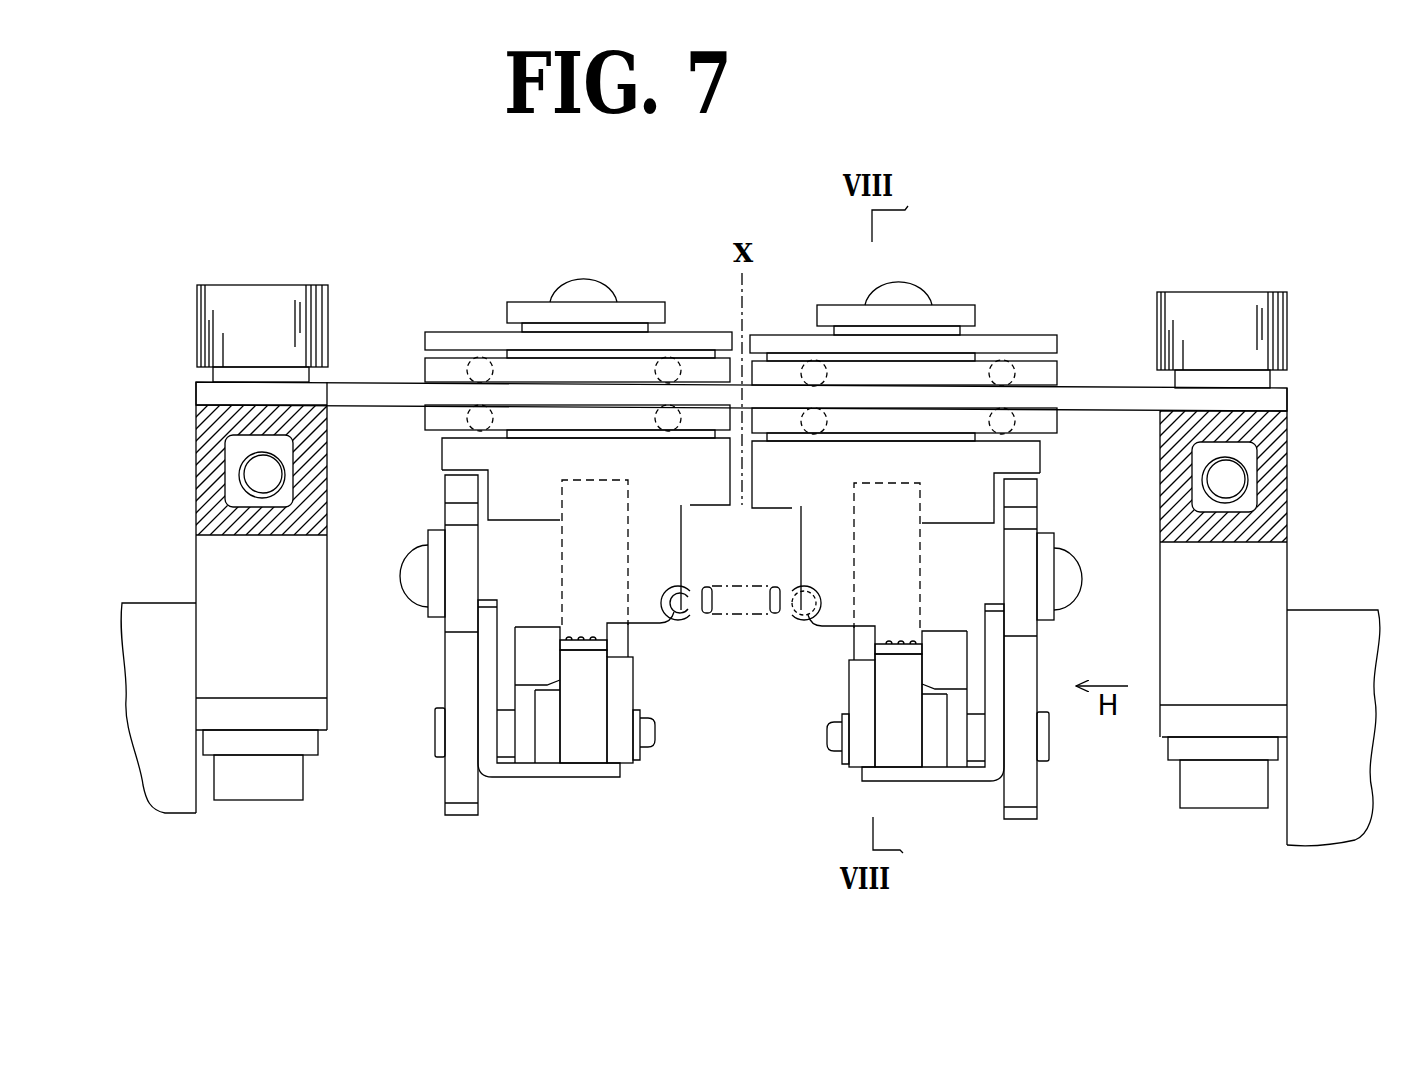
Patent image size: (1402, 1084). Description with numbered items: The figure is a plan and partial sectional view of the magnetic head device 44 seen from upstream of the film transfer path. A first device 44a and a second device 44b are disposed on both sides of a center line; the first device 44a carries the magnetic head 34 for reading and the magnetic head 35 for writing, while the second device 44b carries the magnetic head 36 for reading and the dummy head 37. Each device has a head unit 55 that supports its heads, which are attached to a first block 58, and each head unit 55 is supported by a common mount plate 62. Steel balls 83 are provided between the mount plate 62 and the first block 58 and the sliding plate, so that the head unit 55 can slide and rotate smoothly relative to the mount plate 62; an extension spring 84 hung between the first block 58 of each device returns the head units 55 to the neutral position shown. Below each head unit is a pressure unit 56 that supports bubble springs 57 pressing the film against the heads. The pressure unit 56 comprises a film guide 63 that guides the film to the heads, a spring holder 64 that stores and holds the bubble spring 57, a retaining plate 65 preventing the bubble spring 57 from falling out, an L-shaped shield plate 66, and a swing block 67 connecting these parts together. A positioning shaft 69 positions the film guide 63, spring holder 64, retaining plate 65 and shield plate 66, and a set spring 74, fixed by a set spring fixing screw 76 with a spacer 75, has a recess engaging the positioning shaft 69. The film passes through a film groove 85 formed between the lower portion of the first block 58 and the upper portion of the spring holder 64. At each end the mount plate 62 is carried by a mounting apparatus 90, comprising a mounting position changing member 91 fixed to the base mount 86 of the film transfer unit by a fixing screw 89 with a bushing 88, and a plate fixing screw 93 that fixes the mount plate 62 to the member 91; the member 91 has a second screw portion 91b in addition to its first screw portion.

The magnetic head device 44 is at (1090, 184).
The first device 44a is at (1016, 301).
The second device 44b is at (466, 269).
The mount plate 62 is at (1125, 388).
The mounting apparatus 90 is at (734, 532).
The plate fixing screw 93 is at (262, 297).
The mounting position changing member 91 is at (734, 613).
The second screw portion 91b is at (268, 472).
The bushing 88 is at (318, 742).
The fixing screw 89 is at (300, 782).
The base mount 86 is at (160, 603).
The steel balls 83 is at (1012, 348).
The head unit 55 is at (428, 481).
The set spring 74 is at (455, 662).
The spacer 75 is at (437, 530).
The set spring fixing screw 76 is at (413, 567).
The positioning shaft 69 is at (435, 733).
The shield plate 66 is at (1000, 767).
The swing block 67 is at (527, 757).
The retaining plate 65 is at (550, 757).
The spring holder 64 is at (592, 757).
The film guide 63 is at (628, 757).
The bubble spring 57 is at (925, 652).
The pressure unit 56 is at (661, 761).
The film groove 85 is at (618, 648).
The extension spring 84 is at (705, 614).
The first block 58 is at (670, 528).
The dummy head 37 is at (631, 534).
The magnetic head for reading 36 is at (656, 462).
The magnetic head for writing 35 is at (845, 536).
The magnetic head for reading 34 is at (853, 482).